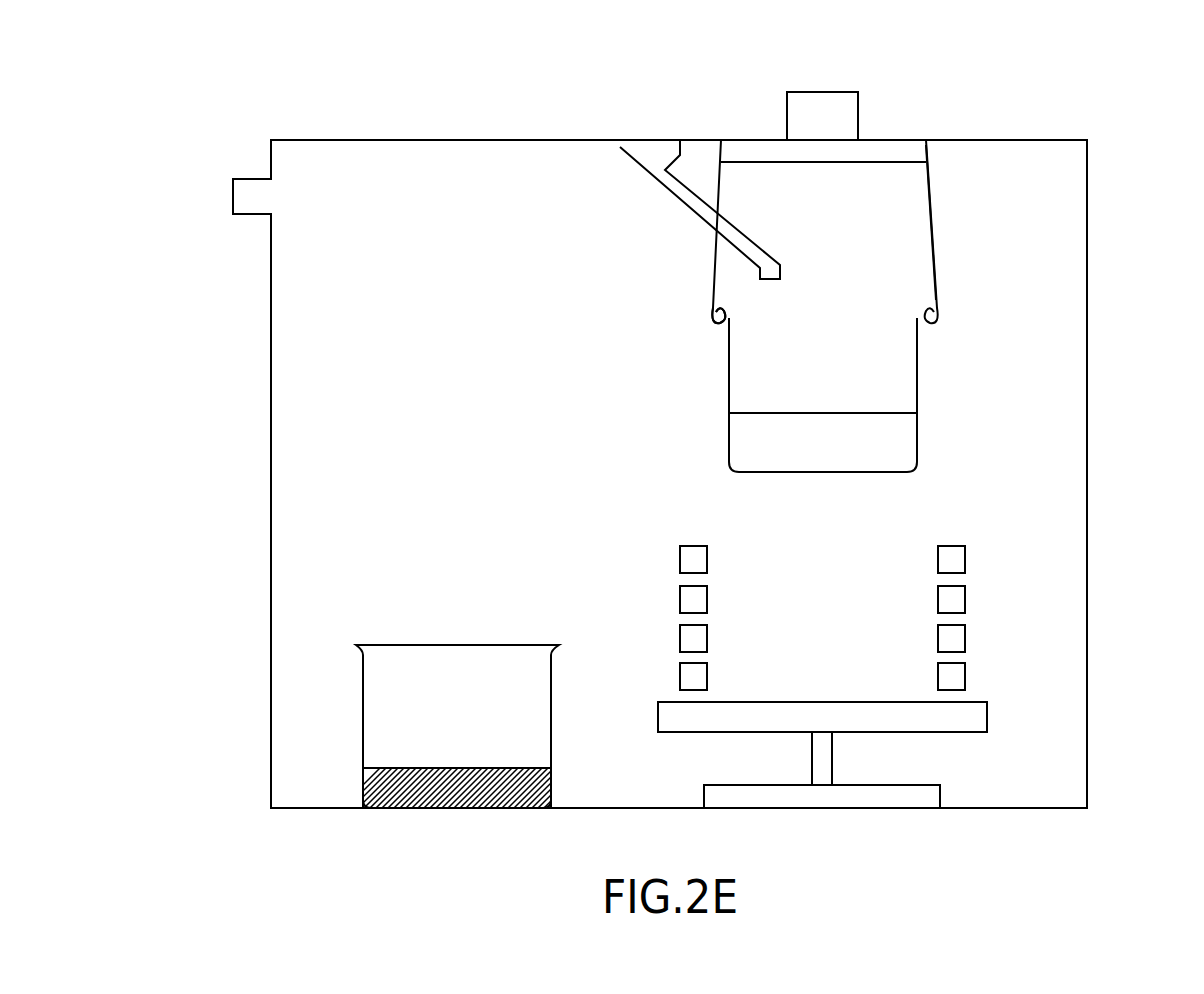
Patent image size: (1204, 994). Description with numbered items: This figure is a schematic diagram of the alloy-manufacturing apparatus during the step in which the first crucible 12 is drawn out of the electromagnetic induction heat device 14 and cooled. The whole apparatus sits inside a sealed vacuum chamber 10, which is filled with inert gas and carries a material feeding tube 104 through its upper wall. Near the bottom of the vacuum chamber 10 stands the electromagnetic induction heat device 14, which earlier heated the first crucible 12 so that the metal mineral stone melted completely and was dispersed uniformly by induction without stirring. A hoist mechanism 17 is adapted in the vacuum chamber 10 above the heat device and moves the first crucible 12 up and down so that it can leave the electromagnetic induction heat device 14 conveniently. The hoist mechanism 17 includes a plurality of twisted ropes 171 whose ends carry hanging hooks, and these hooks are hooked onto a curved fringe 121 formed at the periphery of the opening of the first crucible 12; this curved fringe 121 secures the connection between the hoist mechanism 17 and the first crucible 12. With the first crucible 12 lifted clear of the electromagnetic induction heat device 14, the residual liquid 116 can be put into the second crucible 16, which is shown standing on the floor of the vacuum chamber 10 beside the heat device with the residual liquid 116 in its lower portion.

The vacuum chamber 10 is at (585, 140).
The material feeding tube 104 is at (620, 158).
The hoist mechanism 17 is at (842, 109).
The twisted ropes 171 is at (933, 237).
The first crucible 12 is at (918, 393).
The curved fringe 121 is at (714, 312).
The electromagnetic induction heat device 14 is at (686, 565).
The second crucible 16 is at (363, 752).
The residual liquid 116 is at (473, 808).